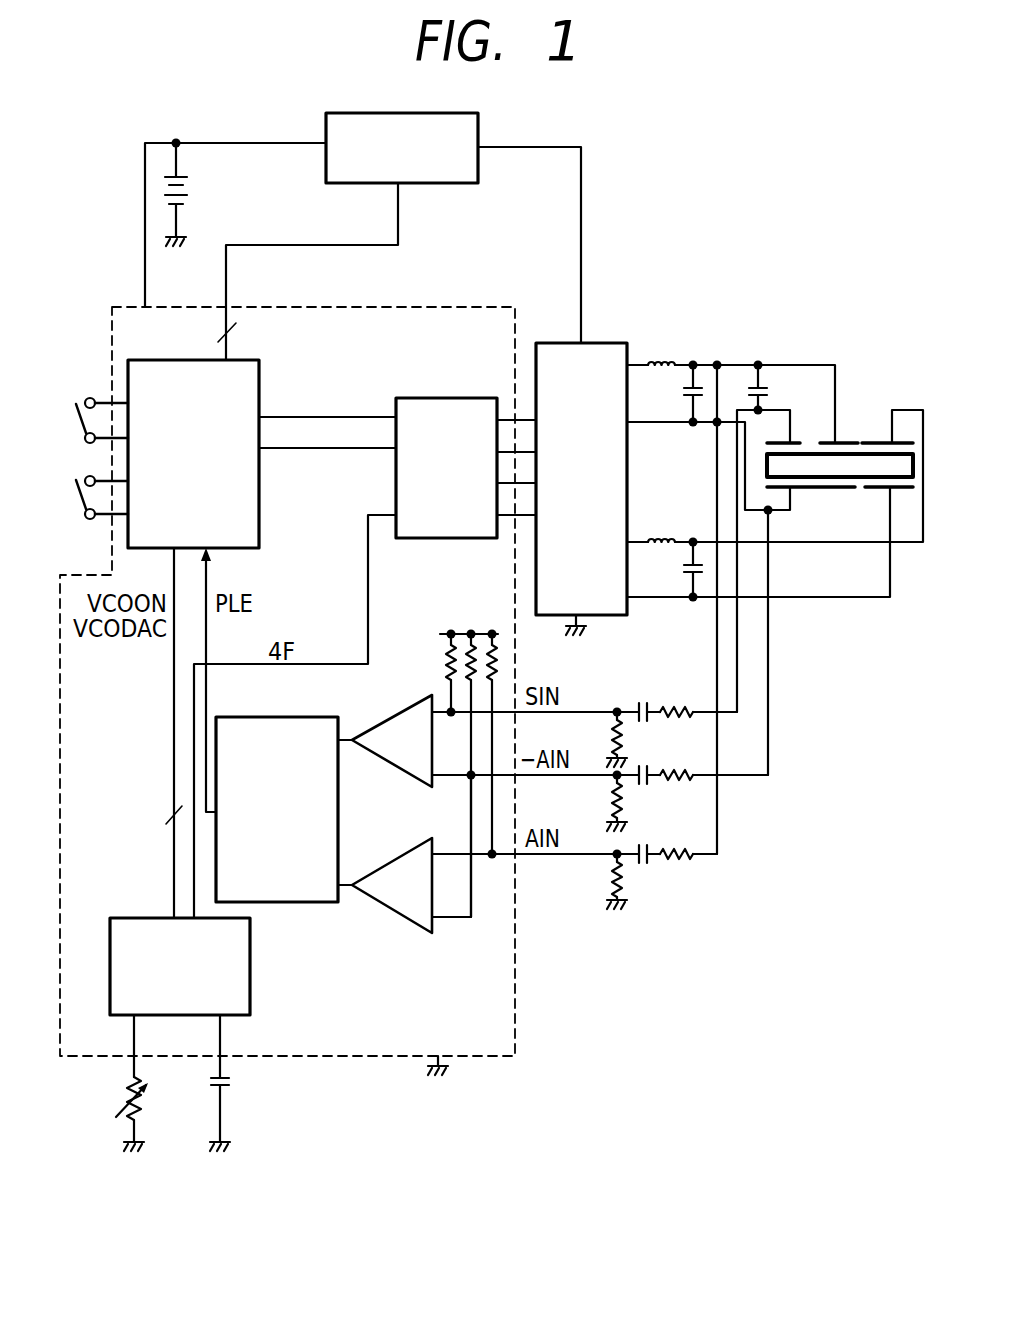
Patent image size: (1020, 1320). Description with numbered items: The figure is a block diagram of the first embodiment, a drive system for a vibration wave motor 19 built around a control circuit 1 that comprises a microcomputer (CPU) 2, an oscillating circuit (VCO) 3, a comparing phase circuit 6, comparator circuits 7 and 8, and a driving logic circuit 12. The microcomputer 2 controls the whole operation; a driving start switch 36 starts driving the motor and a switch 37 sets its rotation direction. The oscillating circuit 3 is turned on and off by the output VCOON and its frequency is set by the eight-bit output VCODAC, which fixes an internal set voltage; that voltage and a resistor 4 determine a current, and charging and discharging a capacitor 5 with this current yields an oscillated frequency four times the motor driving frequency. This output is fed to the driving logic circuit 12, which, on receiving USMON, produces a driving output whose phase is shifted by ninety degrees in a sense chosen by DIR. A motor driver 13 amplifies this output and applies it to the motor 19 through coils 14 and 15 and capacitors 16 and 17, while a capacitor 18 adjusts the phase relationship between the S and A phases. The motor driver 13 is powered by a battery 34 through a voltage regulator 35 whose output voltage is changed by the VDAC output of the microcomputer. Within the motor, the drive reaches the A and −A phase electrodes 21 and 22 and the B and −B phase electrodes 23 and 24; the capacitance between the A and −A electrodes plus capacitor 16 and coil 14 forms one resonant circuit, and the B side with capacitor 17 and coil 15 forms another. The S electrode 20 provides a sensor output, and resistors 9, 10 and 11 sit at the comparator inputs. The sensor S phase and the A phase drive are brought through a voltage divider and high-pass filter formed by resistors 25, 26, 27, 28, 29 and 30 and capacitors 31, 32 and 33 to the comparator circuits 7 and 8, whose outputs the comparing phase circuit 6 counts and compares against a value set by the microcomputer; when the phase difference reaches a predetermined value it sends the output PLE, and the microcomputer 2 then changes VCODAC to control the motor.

The control circuit 1 is at (405, 305).
The microcomputer (CPU) 2 is at (262, 372).
The oscillating circuit (VCO) 3 is at (252, 950).
The resistor 4 is at (127, 1088).
The capacitor 5 is at (232, 1082).
The comparing phase circuit 6 is at (308, 716).
The comparator circuit 7 is at (390, 715).
The comparator circuit 8 is at (392, 905).
The resistor 9 is at (440, 660).
The resistor 10 is at (466, 631).
The resistor 11 is at (490, 631).
The driving logic circuit 12 is at (446, 396).
The motor driver 13 is at (590, 341).
The coil 14 is at (662, 360).
The coil 15 is at (662, 538).
The capacitor 16 is at (684, 390).
The capacitor 17 is at (684, 567).
The capacitor 18 is at (766, 372).
The vibration wave motor 19 is at (862, 453).
The sensor electrode S 20 is at (800, 441).
The A phase electrode 21 is at (838, 441).
The −A phase electrode 22 is at (836, 489).
The B phase electrode 23 is at (906, 441).
The −B phase electrode 24 is at (900, 490).
The resistor 25 is at (678, 705).
The resistor 26 is at (611, 732).
The resistor 27 is at (678, 768).
The resistor 28 is at (611, 795).
The resistor 29 is at (678, 847).
The resistor 30 is at (611, 874).
The capacitor 31 is at (645, 704).
The capacitor 32 is at (645, 767).
The capacitor 33 is at (645, 846).
The battery 34 is at (189, 181).
The voltage regulator 35 is at (480, 127).
The driving start switch 36 is at (80, 414).
The switch 37 is at (80, 504).